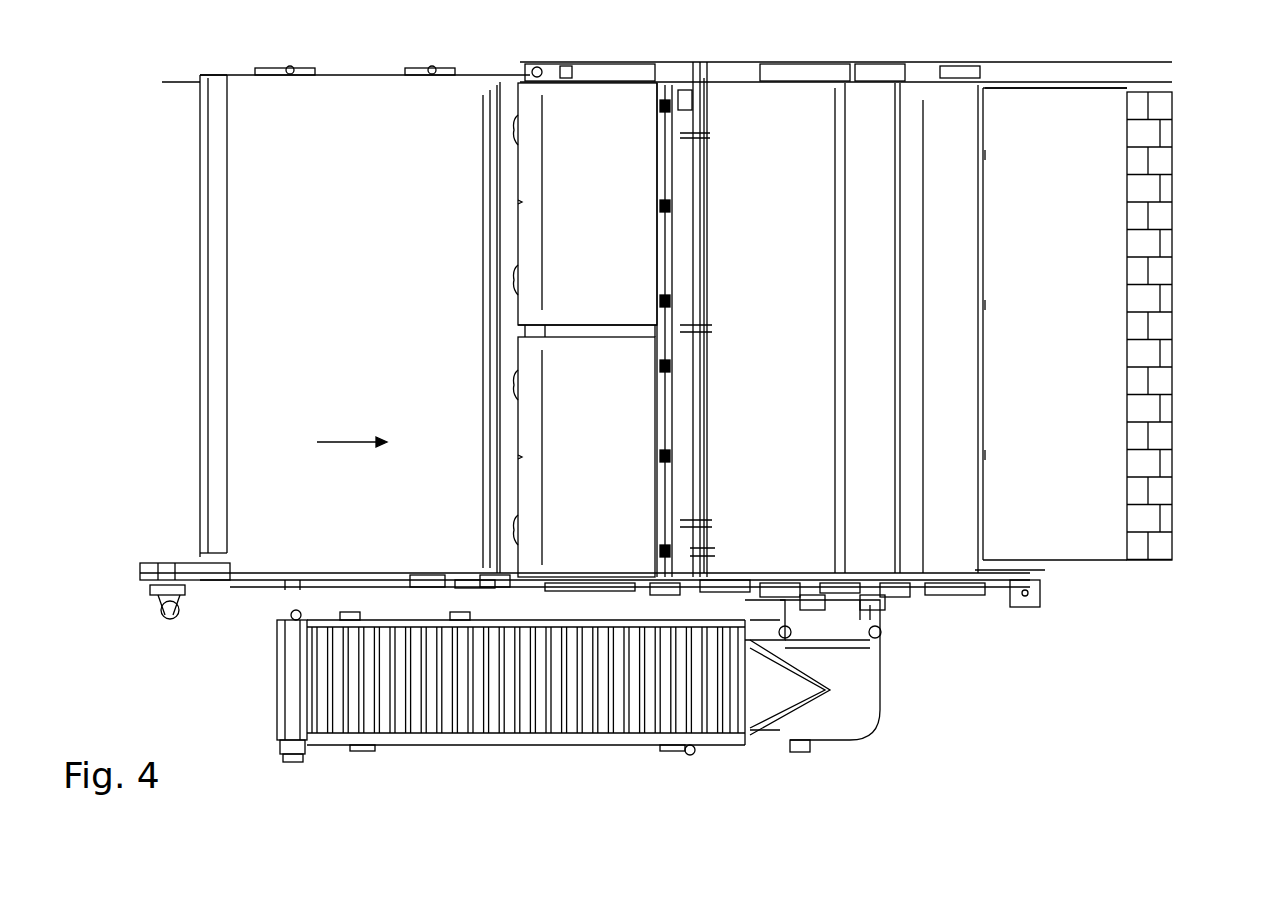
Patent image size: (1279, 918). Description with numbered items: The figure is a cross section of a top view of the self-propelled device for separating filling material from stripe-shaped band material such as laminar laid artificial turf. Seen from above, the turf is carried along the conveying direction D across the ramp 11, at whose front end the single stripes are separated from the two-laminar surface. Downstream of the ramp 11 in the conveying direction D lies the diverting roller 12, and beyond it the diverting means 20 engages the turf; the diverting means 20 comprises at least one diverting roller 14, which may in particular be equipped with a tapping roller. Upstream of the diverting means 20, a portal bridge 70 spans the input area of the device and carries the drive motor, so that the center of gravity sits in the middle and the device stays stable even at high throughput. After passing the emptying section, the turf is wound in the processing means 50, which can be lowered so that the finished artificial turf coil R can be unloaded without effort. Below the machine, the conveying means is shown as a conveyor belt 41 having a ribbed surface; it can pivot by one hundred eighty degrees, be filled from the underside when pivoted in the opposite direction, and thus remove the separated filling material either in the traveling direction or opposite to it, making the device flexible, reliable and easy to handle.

The ramp 11 is at (368, 343).
The portal bridge 70 is at (614, 445).
The diverting roller 12 is at (866, 88).
The diverting means 20 is at (940, 92).
The diverting roller 14 is at (975, 185).
The processing means 50 is at (1157, 352).
The conveyor belt 41 is at (560, 745).
The artificial turf coil R is at (1053, 348).
The conveying direction D is at (352, 446).